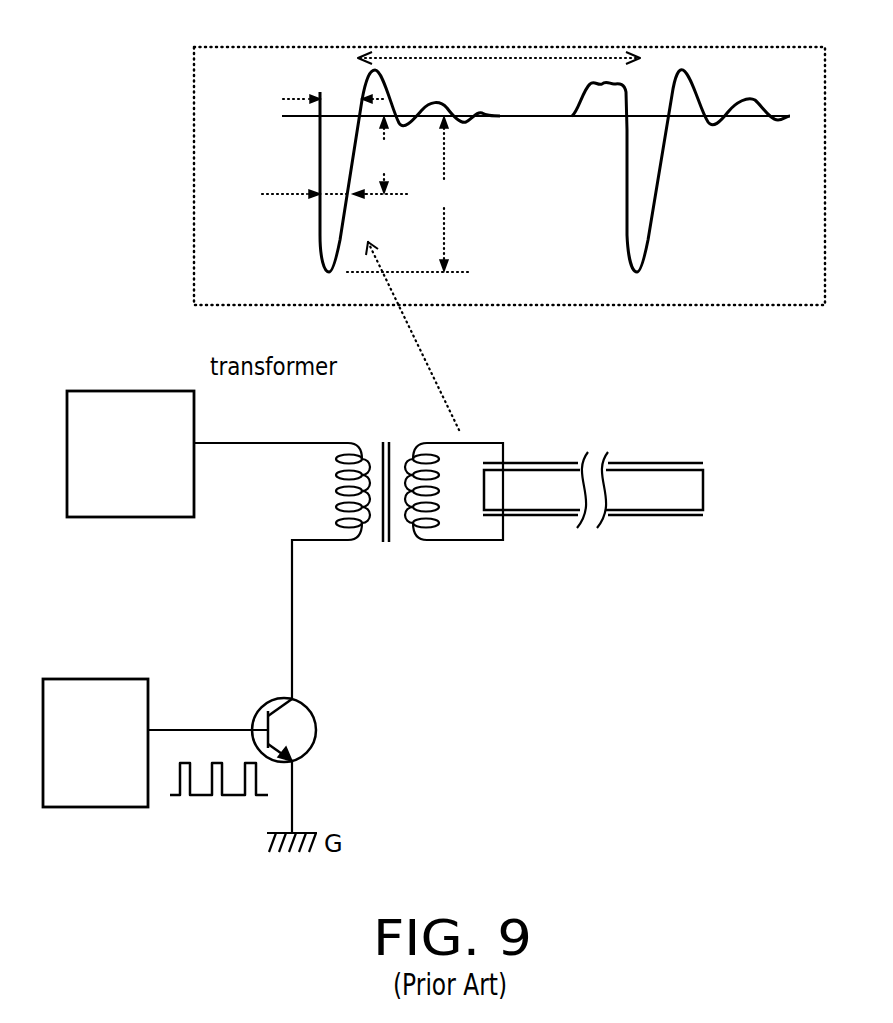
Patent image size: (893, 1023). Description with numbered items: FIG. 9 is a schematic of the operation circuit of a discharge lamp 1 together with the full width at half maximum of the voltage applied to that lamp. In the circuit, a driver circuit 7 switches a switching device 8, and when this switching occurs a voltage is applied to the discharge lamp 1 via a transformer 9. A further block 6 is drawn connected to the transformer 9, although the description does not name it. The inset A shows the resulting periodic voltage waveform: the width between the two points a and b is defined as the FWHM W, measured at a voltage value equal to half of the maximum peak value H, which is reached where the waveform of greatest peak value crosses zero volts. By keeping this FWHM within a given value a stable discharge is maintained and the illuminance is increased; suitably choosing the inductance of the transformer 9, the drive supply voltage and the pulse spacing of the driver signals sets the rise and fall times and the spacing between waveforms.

The discharge lamp 1 is at (656, 458).
The measurement circuit 6 is at (108, 391).
The driver circuit 7 is at (82, 679).
The switching device 8 is at (310, 708).
The transformer 9 is at (364, 436).
The waveform diagram A is at (194, 93).